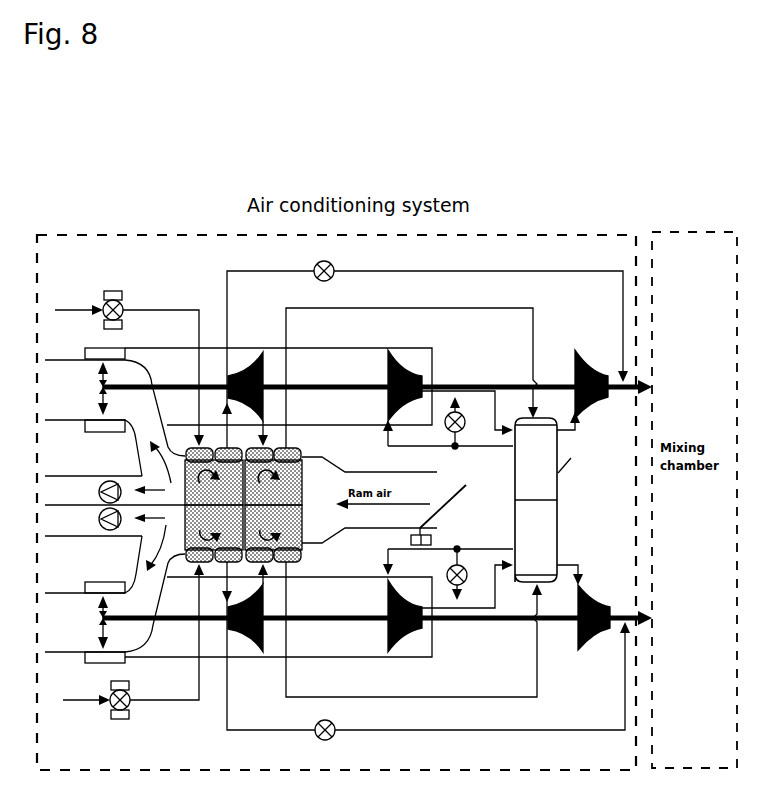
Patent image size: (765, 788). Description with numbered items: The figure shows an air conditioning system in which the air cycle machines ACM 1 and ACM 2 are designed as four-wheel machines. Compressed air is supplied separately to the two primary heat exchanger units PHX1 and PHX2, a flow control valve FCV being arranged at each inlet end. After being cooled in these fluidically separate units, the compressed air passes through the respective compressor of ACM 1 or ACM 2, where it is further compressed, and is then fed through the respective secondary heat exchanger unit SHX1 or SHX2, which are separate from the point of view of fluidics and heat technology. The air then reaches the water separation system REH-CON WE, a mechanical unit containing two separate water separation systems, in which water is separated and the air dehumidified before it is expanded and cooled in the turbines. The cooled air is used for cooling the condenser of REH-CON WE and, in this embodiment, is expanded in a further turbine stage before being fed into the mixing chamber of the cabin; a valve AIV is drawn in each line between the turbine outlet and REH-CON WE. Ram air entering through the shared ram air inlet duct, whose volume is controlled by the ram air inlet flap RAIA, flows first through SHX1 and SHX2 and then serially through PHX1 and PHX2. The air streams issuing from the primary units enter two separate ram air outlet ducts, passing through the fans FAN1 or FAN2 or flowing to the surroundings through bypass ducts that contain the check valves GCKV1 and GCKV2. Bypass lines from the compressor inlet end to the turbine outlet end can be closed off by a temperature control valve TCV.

The fan FAN1 is at (115, 412).
The fan FAN2 is at (115, 599).
The flow control valve FCV is at (113, 503).
The check valve GCKV1 is at (115, 482).
The check valve GCKV2 is at (105, 533).
The primary heat exchanger unit PHX1 is at (214, 476).
The primary heat exchanger unit PHX2 is at (214, 533).
The secondary heat exchanger unit SHX1 is at (273, 476).
The secondary heat exchanger unit SHX2 is at (273, 533).
The ram air inlet flap RAIA is at (441, 515).
The air cycle machine ACM 1 is at (325, 385).
The air cycle machine ACM 2 is at (325, 616).
The temperature control valve TCV is at (426, 500).
The anti-ice valve AIV is at (466, 498).
The water separation system REH-CON WE is at (562, 498).